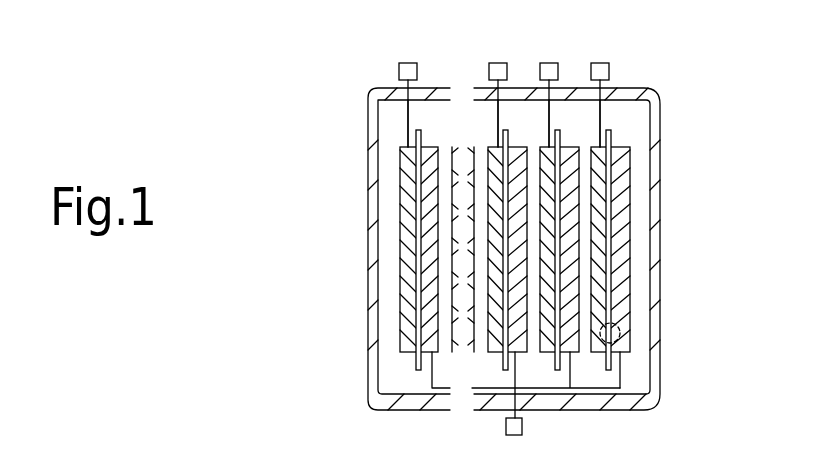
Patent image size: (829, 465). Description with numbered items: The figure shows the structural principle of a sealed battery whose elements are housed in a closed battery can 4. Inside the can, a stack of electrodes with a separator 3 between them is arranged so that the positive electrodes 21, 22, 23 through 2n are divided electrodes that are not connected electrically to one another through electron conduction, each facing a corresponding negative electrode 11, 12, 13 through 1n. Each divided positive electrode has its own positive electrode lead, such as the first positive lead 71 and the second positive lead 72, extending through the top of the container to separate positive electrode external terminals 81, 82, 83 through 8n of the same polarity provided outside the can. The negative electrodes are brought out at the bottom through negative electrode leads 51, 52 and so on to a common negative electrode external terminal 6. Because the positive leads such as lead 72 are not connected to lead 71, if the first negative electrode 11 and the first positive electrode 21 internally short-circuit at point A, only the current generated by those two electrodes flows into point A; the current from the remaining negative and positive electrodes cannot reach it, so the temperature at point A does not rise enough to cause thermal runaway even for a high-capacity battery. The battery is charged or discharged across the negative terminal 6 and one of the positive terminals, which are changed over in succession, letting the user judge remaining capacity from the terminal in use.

The separator 3 is at (514, 245).
The battery can 4 is at (660, 363).
The negative electrode external terminal 6 is at (506, 433).
The positive electrode external terminal 8n is at (408, 62).
The positive electrode external terminal 81 is at (600, 62).
The positive electrode external terminal 82 is at (549, 62).
The positive electrode external terminal 83 is at (498, 62).
The positive electrode lead 71 is at (600, 110).
The positive electrode lead 72 is at (490, 124).
The positive electrode 2n is at (408, 190).
The negative electrode 1n is at (423, 227).
The positive electrode 23 is at (493, 275).
The negative electrode 13 is at (520, 320).
The positive electrode 22 is at (552, 190).
The negative electrode 12 is at (573, 210).
The positive electrode 21 is at (600, 302).
The negative electrode 11 is at (606, 328).
The negative electrode lead 51 is at (622, 383).
The negative electrode lead 52 is at (485, 379).
The internal short-circuit point A is at (598, 350).